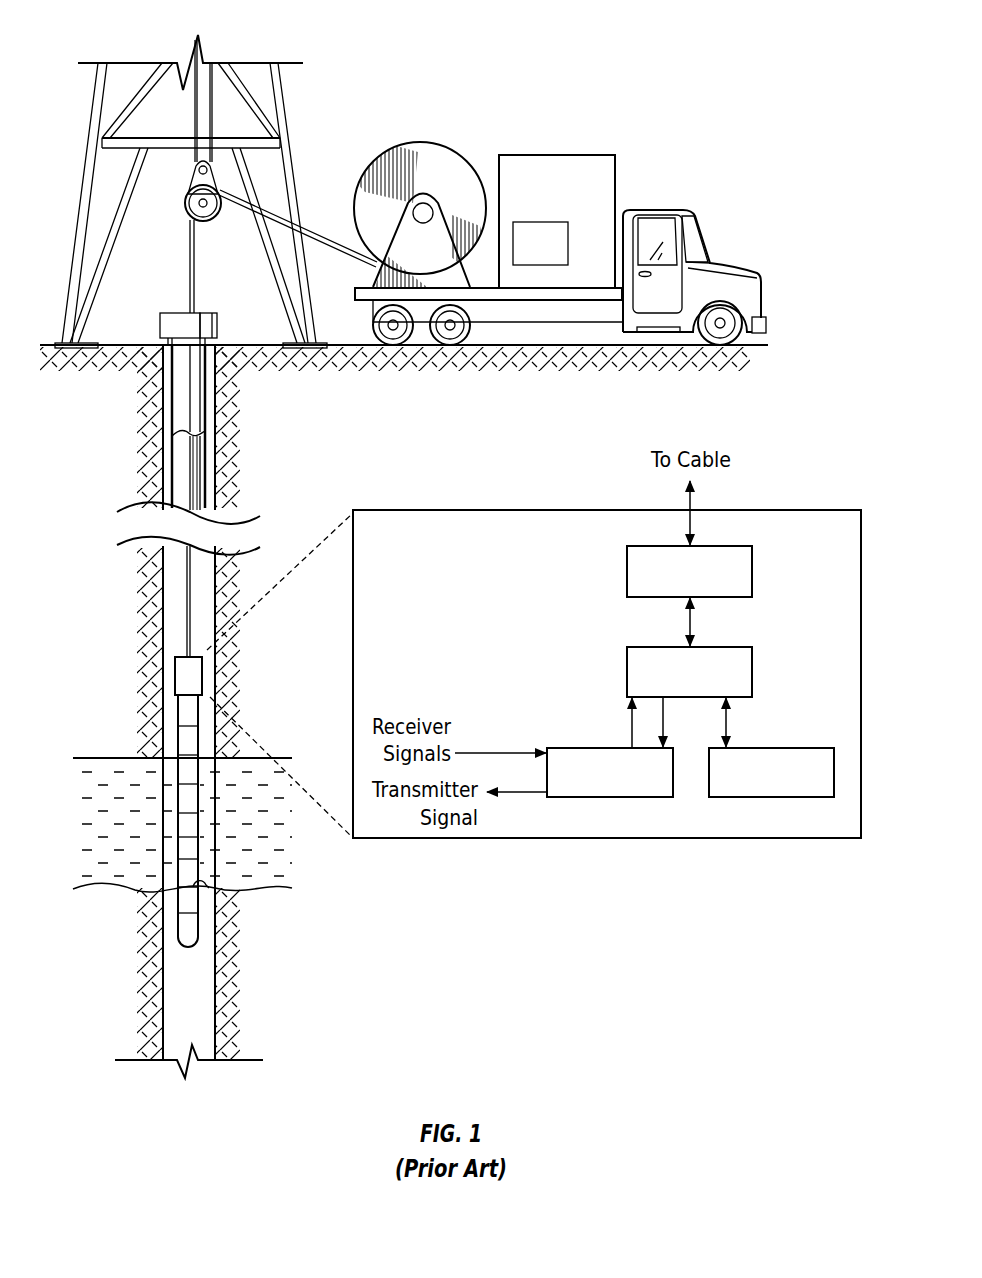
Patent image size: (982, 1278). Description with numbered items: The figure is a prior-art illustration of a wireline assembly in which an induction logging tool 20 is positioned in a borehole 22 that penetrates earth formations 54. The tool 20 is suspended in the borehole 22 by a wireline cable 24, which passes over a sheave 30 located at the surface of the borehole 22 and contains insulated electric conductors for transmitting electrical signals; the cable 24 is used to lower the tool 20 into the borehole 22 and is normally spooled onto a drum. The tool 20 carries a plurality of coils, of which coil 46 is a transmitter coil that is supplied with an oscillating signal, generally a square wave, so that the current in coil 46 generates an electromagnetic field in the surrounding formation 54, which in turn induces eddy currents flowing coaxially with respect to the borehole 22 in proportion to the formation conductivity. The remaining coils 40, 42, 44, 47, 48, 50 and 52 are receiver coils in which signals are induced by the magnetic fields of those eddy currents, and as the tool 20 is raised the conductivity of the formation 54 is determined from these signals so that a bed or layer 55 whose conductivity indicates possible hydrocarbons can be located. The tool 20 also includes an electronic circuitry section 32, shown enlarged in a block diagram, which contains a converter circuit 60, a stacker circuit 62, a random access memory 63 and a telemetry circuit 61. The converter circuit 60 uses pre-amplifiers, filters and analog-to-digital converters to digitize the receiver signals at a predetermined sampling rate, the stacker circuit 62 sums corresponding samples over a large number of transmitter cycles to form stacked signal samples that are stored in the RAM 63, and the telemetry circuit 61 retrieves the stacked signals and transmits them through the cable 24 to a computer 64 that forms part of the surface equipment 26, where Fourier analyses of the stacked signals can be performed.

The induction logging tool 20 is at (176, 645).
The borehole 22 is at (170, 562).
The wireline cable 24 is at (193, 286).
The surface equipment 26 is at (557, 208).
The sheave 30 is at (420, 142).
The electronic circuitry section 32 is at (186, 676).
The receiver coil 40 is at (196, 726).
The receiver coil 42 is at (196, 755).
The receiver coil 44 is at (196, 784).
The transmitter coil 46 is at (196, 813).
The receiver coil 47 is at (196, 837).
The receiver coil 48 is at (196, 859).
The receiver coil 50 is at (215, 887).
The receiver coil 52 is at (196, 913).
The earth formation 54 is at (270, 579).
The bed or layer 55 is at (265, 811).
The converter circuit 60 is at (595, 748).
The telemetry circuit 61 is at (627, 571).
The stacker circuit 62 is at (627, 672).
The random access memory (RAM) 63 is at (787, 748).
The computer 64 is at (568, 253).